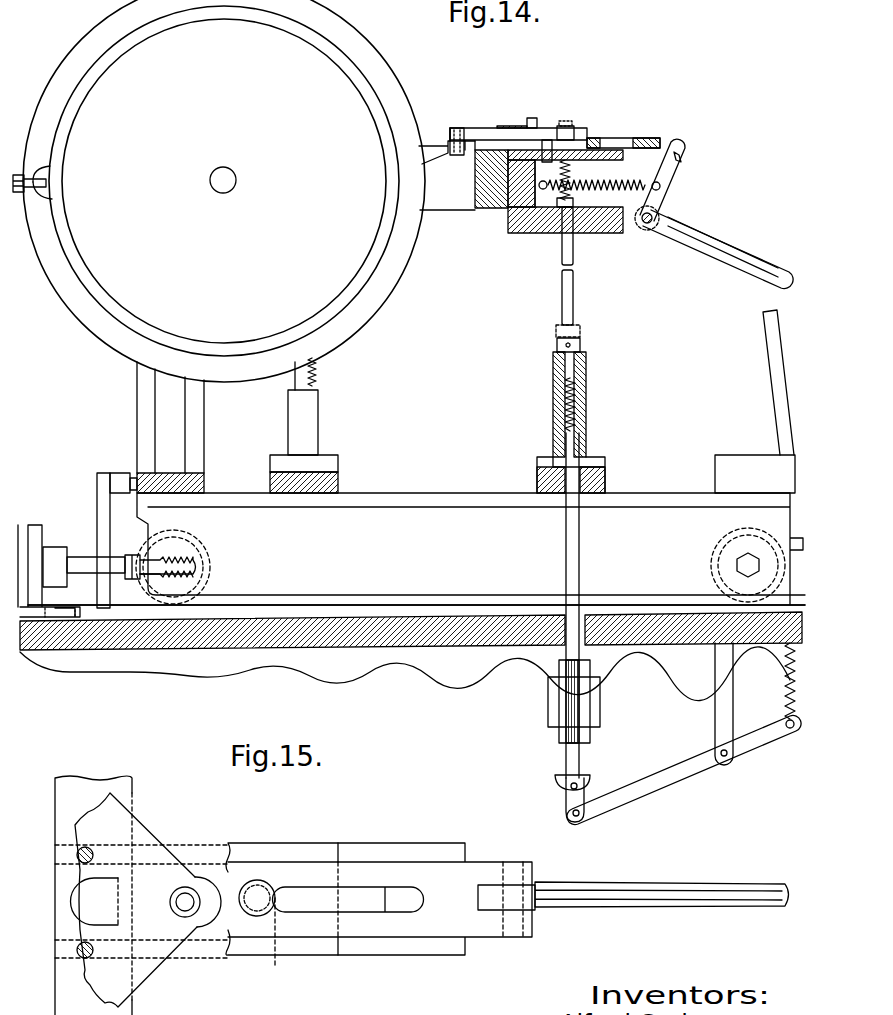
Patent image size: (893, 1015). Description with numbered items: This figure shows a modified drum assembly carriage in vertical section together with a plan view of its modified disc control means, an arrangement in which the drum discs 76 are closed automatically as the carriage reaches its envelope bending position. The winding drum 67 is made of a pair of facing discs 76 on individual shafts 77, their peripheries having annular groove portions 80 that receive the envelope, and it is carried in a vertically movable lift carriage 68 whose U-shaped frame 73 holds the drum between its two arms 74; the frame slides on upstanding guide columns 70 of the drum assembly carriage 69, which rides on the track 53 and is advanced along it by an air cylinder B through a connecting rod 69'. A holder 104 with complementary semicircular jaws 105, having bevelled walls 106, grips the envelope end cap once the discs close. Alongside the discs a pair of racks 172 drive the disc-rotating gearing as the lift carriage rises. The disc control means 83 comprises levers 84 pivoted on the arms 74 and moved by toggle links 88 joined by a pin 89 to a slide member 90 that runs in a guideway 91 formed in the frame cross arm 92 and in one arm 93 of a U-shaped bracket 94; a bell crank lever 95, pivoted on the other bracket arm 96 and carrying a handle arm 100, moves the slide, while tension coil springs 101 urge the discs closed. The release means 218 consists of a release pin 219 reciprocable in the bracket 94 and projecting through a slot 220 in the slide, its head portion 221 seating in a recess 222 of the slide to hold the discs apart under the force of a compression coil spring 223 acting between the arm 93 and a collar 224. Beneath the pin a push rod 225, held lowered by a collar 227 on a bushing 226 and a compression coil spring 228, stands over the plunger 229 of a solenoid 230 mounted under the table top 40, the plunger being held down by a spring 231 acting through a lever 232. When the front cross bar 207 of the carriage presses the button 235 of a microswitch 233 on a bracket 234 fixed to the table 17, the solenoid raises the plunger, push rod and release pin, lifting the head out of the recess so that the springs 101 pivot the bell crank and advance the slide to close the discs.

In FIG. 14, the winding drum 67 is at (90, 12).
In FIG. 14, the facing discs 76 is at (398, 82).
In FIG. 14, the shafts 77 is at (236, 176).
In FIG. 14, the annular groove portions 80 is at (380, 282).
In FIG. 14, the holder 104 is at (19, 192).
In FIG. 14, the semicircular jaws 105 is at (52, 170).
In FIG. 14, the walls of the jaw openings 106 is at (52, 198).
In FIG. 14, the arms 74 is at (441, 196).
In FIG. 14, the lift carriage 68 is at (452, 218).
In FIG. 14, the levers 84 is at (432, 151).
In FIG. 14, the U-shaped frame 73 is at (468, 215).
In FIG. 15, the U-shaped frame 73 is at (132, 787).
In FIG. 14, the toggle links 88 is at (532, 120).
In FIG. 15, the toggle links 88 is at (150, 848).
In FIG. 14, the guideway 91 is at (480, 145).
In FIG. 15, the guideway 91 is at (310, 852).
In FIG. 14, the bracket arm 93 is at (547, 140).
In FIG. 15, the bracket arm 93 is at (242, 952).
In FIG. 14, the head portion 221 is at (566, 126).
In FIG. 15, the head portion 221 is at (280, 900).
In FIG. 14, the slot 220 is at (618, 138).
In FIG. 15, the slot 220 is at (410, 912).
In FIG. 14, the slide member 90 is at (652, 140).
In FIG. 15, the slide member 90 is at (374, 927).
In FIG. 14, the disc control means 83 is at (600, 120).
In FIG. 15, the disc control means 83 is at (369, 830).
In FIG. 14, the cross arm 92 is at (498, 198).
In FIG. 15, the cross arm 92 is at (128, 1009).
In FIG. 14, the U-shaped bracket 94 is at (522, 225).
In FIG. 14, the bracket arm 96 is at (546, 233).
In FIG. 14, the compression coil spring 223 is at (575, 168).
In FIG. 14, the tension coil springs 101 is at (662, 184).
In FIG. 14, the collar 224 is at (575, 205).
In FIG. 14, the bell crank lever 95 is at (660, 210).
In FIG. 15, the bell crank lever 95 is at (530, 893).
In FIG. 14, the handle arm 100 is at (745, 280).
In FIG. 15, the handle arm 100 is at (732, 885).
In FIG. 14, the release pin 219 is at (573, 250).
In FIG. 15, the release pin 219 is at (275, 960).
In FIG. 14, the release means 218 is at (583, 293).
In FIG. 14, the push rod 225 is at (562, 306).
In FIG. 14, the collar 227 is at (582, 344).
In FIG. 14, the bushing 226 is at (588, 388).
In FIG. 14, the compression coil spring 228 is at (563, 376).
In FIG. 14, the plunger 229 is at (566, 552).
In FIG. 14, the solenoid 230 is at (548, 706).
In FIG. 14, the racks 172 is at (318, 376).
In FIG. 14, the guide columns 70 is at (160, 406).
In FIG. 14, the front cross bar 207 is at (205, 483).
In FIG. 14, the drum assembly carriage 69 is at (416, 457).
In FIG. 14, the bracket 234 is at (97, 493).
In FIG. 14, the microswitch 233 is at (114, 473).
In FIG. 14, the button 235 is at (133, 478).
In FIG. 14, the air cylinder B is at (22, 526).
In FIG. 14, the connecting rod 69' is at (119, 553).
In FIG. 14, the track 53 is at (372, 605).
In FIG. 14, the table top 40 is at (434, 644).
In FIG. 14, the table 17 is at (356, 676).
In FIG. 14, the spring 231 is at (784, 688).
In FIG. 14, the lever 232 is at (680, 760).
In FIG. 15, the pin 89 is at (194, 903).
In FIG. 15, the recess 222 is at (257, 880).